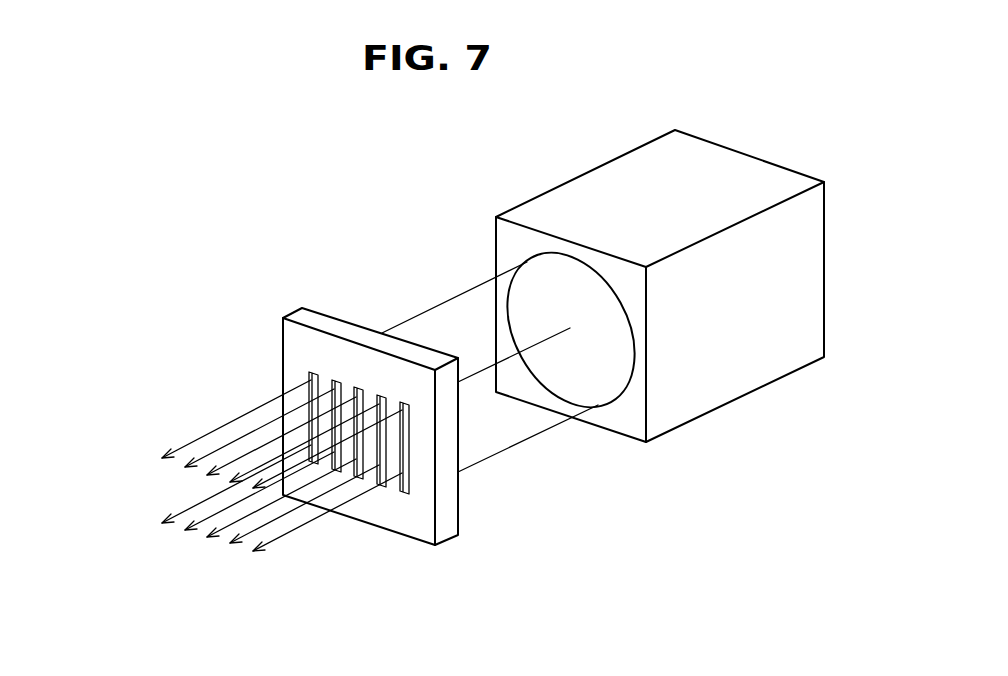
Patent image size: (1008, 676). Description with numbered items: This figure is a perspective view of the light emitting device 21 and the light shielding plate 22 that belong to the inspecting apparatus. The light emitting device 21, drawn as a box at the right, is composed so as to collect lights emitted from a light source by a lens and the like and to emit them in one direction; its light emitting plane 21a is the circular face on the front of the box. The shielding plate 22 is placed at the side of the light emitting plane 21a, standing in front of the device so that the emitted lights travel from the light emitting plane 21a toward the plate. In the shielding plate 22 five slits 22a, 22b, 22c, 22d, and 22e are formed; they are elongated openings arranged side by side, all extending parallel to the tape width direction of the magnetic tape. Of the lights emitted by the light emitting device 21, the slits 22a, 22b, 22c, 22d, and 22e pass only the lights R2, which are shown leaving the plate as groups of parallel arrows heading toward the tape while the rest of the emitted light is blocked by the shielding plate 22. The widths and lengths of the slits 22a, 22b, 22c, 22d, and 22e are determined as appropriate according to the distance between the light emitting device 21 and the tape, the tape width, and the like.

The light emitting device 21 is at (595, 162).
The light emitting plane 21a is at (617, 370).
The light shielding plate 22 is at (273, 360).
The slit 22a is at (309, 372).
The slit 22b is at (332, 380).
The slit 22c is at (354, 387).
The slit 22d is at (377, 395).
The slit 22e is at (403, 492).
The lights R2 is at (173, 433).